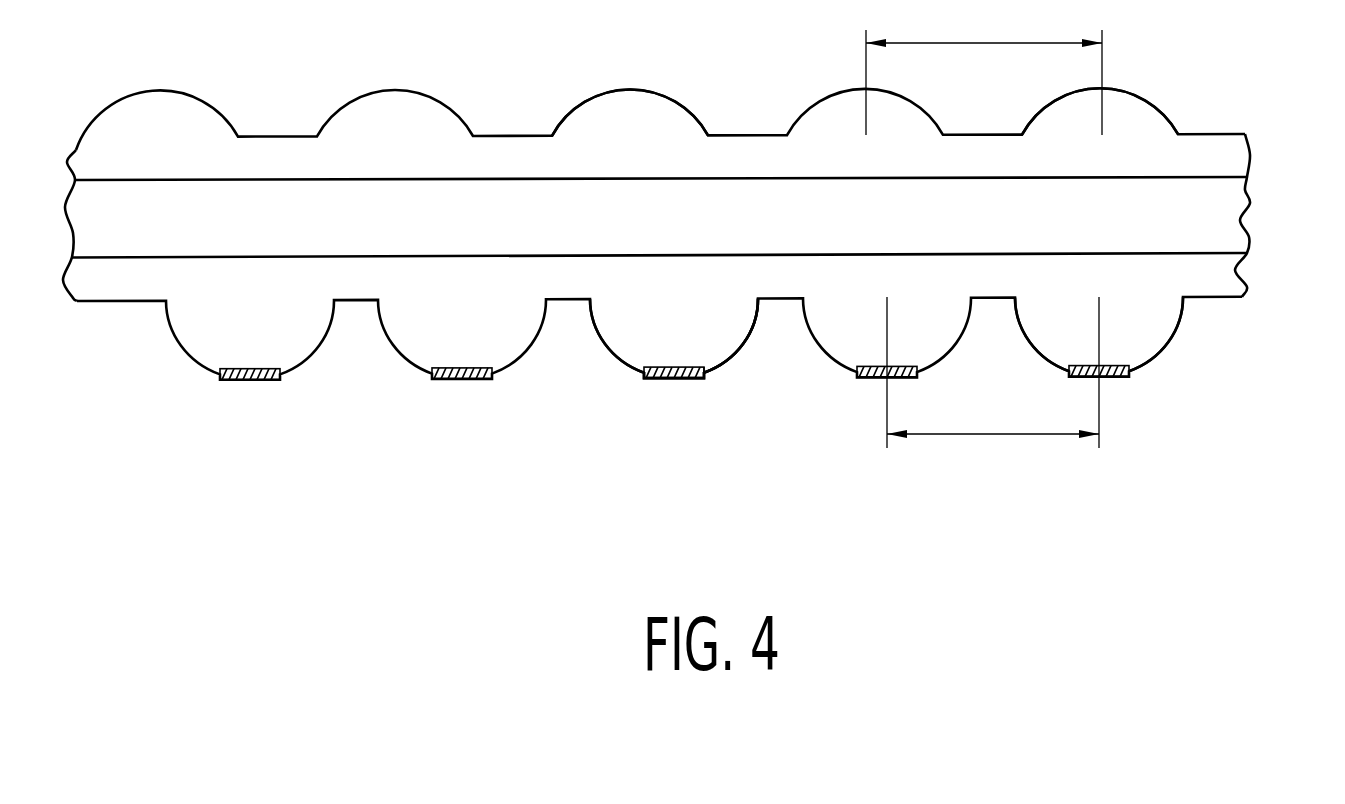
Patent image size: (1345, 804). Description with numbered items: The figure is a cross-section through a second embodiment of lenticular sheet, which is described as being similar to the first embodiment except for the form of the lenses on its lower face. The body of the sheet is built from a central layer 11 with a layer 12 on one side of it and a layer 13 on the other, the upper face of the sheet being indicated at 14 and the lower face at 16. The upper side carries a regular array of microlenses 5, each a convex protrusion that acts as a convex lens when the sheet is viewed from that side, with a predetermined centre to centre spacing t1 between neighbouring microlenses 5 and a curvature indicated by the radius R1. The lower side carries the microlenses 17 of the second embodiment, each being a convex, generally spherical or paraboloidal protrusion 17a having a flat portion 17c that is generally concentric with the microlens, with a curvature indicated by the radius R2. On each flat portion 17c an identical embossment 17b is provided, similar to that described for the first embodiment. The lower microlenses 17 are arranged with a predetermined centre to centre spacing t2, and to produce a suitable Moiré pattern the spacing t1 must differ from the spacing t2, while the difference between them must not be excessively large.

The microlens 5 is at (630, 88).
The upper surface layer 14 is at (1217, 134).
The upper layer 12 is at (1185, 156).
The substrate 11 is at (1223, 208).
The lower layer 13 is at (1183, 272).
The lower surface layer 16 is at (1213, 297).
The microlens 17 is at (682, 387).
The protrusion 17a is at (743, 347).
The embossment 17b is at (668, 378).
The flat portion 17c is at (705, 378).
The radius of upper projection R1 is at (1152, 100).
The radius of lower groove R2 is at (1172, 342).
The centre to centre spacing t1 is at (984, 68).
The centre to centre spacing t2 is at (993, 372).